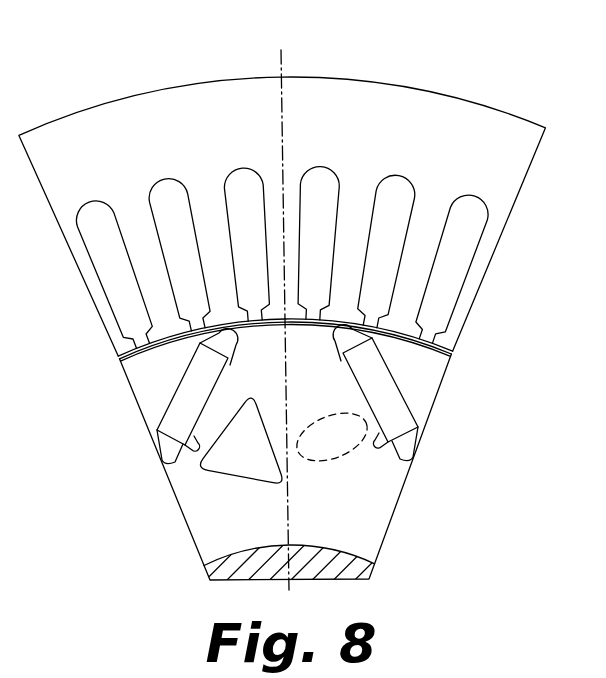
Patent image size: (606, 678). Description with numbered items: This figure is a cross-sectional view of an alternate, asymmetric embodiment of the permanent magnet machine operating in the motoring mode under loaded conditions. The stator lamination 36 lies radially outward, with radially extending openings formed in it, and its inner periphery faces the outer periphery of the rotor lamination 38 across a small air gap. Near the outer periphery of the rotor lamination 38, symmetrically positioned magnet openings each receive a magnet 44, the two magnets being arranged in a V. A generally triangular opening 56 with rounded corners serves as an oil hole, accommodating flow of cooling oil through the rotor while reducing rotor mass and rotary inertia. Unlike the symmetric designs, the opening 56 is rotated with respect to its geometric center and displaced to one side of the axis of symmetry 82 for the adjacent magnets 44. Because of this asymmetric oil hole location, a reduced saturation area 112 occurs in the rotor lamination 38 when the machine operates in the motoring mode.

The stator lamination 36 is at (426, 89).
The rotor lamination 38 is at (453, 373).
The magnet 44 is at (183, 381).
The opening 56 is at (235, 487).
The axis of symmetry 82 is at (300, 63).
The reduced saturation area 112 is at (330, 458).